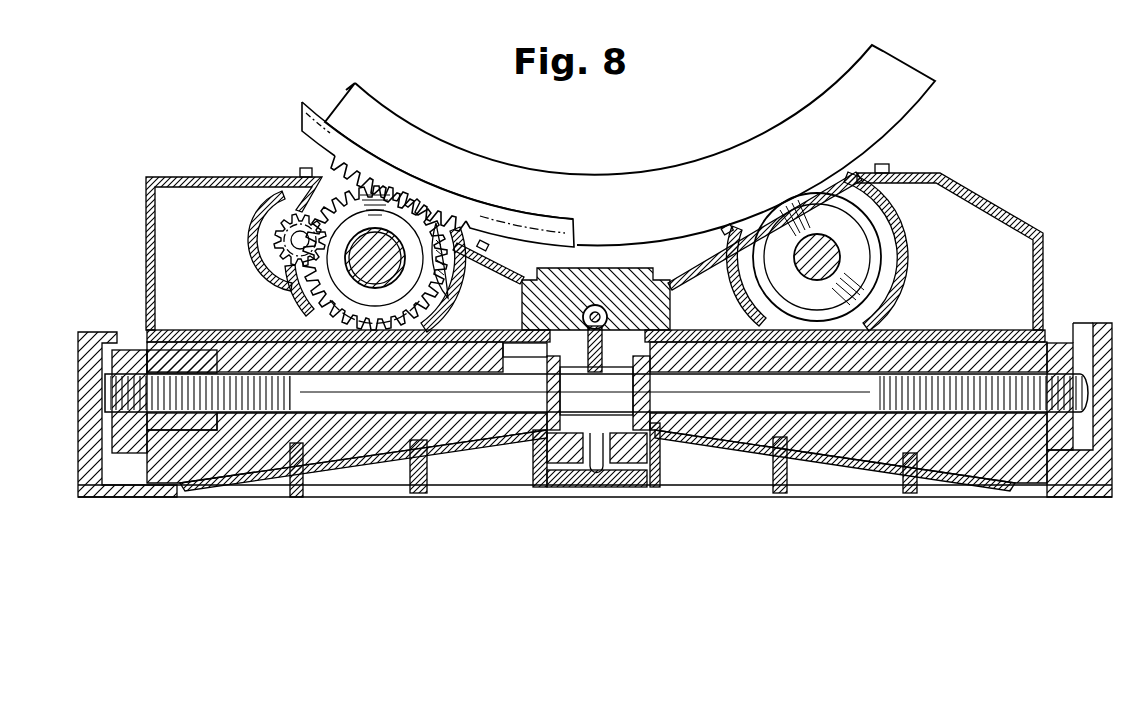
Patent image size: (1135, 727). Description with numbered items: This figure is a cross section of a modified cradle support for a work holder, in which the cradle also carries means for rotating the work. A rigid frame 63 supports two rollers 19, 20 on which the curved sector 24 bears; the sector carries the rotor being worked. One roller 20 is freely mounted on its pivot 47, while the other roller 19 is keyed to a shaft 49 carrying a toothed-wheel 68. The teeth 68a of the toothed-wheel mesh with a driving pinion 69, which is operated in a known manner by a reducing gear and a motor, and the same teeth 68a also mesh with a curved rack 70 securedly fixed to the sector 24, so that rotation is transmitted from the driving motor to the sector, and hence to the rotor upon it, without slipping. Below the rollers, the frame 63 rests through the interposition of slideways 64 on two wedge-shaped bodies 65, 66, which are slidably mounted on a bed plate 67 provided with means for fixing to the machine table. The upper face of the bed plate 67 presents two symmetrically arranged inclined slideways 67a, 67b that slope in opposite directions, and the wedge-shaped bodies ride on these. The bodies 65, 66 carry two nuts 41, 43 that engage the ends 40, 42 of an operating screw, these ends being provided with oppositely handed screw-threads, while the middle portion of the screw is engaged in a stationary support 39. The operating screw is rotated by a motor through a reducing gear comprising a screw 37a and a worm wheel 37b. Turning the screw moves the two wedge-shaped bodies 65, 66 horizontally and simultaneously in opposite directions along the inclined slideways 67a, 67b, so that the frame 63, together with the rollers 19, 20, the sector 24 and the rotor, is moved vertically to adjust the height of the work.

The sector 24 is at (673, 172).
The curved rack 70 is at (523, 213).
The toothed-wheel 68 is at (383, 213).
The shaft 49 is at (392, 252).
The teeth 68a is at (300, 288).
The driving pinion 69 is at (266, 238).
The roller 19 is at (447, 283).
The rigid frame 63 is at (236, 165).
The roller 20 is at (866, 227).
The pivot 47 is at (841, 262).
The screw 37a is at (603, 303).
The slideways 64 is at (210, 329).
The end of operating screw 40 is at (134, 330).
The nut 43 is at (1080, 330).
The nut 41 is at (132, 455).
The wedge-shaped body 65 is at (250, 455).
The wedge-shaped body 66 is at (995, 455).
The bed plate 67 is at (560, 490).
The inclined slideway 67a is at (362, 470).
The inclined slideway 67b is at (870, 452).
The worm wheel 37b is at (620, 465).
The stationary support 39 is at (580, 468).
The end of operating screw 42 is at (828, 396).